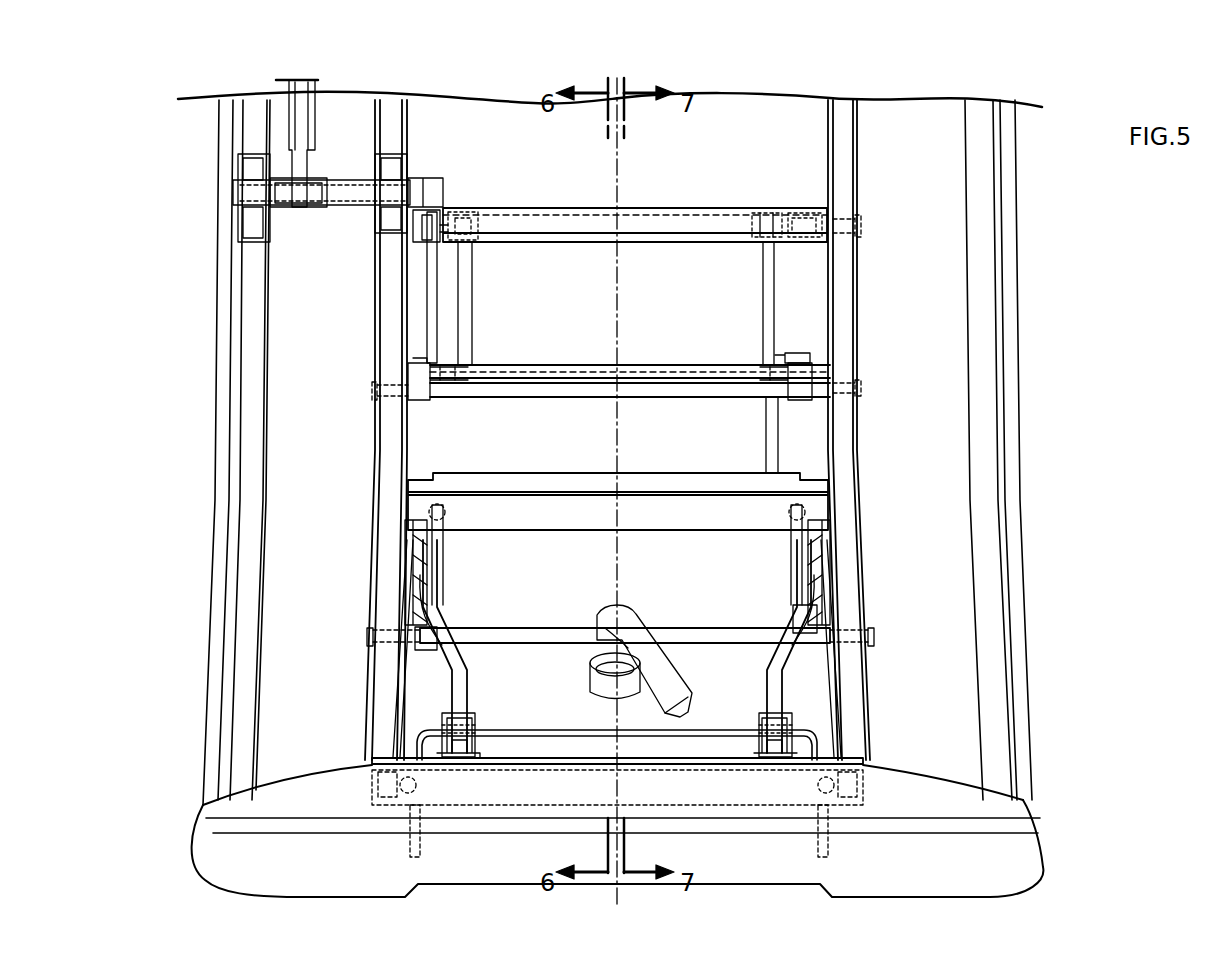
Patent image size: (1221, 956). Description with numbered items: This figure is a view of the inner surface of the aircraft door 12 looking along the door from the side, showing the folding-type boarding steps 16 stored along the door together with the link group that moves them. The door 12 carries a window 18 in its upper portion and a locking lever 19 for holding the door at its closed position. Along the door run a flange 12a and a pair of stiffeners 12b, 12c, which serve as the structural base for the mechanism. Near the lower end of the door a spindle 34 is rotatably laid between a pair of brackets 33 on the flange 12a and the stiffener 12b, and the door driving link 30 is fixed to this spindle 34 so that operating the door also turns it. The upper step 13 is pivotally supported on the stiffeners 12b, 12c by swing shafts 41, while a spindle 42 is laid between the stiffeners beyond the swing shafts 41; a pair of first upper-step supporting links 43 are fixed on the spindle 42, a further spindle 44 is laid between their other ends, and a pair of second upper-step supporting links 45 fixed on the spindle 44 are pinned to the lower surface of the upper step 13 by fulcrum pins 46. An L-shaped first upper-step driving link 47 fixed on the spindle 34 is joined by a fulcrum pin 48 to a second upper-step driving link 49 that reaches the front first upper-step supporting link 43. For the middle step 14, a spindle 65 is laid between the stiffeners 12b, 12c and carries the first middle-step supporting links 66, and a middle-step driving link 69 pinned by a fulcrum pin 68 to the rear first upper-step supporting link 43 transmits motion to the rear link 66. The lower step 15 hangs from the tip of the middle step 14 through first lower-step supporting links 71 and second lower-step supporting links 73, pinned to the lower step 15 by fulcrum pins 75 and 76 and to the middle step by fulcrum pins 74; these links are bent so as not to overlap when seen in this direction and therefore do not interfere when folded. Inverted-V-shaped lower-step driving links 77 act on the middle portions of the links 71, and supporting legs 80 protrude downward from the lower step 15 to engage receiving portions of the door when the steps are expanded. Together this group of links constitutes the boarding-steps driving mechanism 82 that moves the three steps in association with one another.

The door 12 is at (1022, 335).
The flange 12a is at (250, 474).
The stiffener 12b is at (381, 460).
The stiffener 12c is at (845, 474).
The upper step 13 is at (645, 210).
The middle step 14 is at (592, 484).
The lower step 15 is at (580, 760).
The boarding steps 16 is at (768, 178).
The window 18 is at (695, 752).
The locking lever 19 is at (655, 655).
The door driving link 30 is at (312, 125).
The brackets 33 is at (238, 222).
The spindle 34 is at (347, 193).
The swing shafts 41 is at (390, 237).
The spindle 42 is at (650, 394).
The first upper-step supporting links 43 is at (418, 396).
The spindle 44 is at (588, 364).
The second upper-step supporting links 45 is at (467, 297).
The fulcrum pins 46 is at (480, 222).
The first upper-step driving link 47 is at (437, 195).
The fulcrum pin 48 is at (455, 230).
The second upper-step driving link 49 is at (433, 320).
The spindle 65 is at (545, 633).
The first middle-step supporting links 66 is at (415, 556).
The fulcrum pin 68 is at (796, 352).
The middle-step driving link 69 is at (770, 427).
The first lower-step supporting links 71 is at (458, 668).
The second lower-step supporting links 73 is at (402, 700).
The fulcrum pins 74 is at (440, 512).
The fulcrum pins 75 is at (460, 735).
The fulcrum pins 76 is at (417, 785).
The lower-step driving links 77 is at (443, 545).
The supporting legs 80 is at (412, 845).
The boarding-steps driving mechanism 82 is at (882, 412).